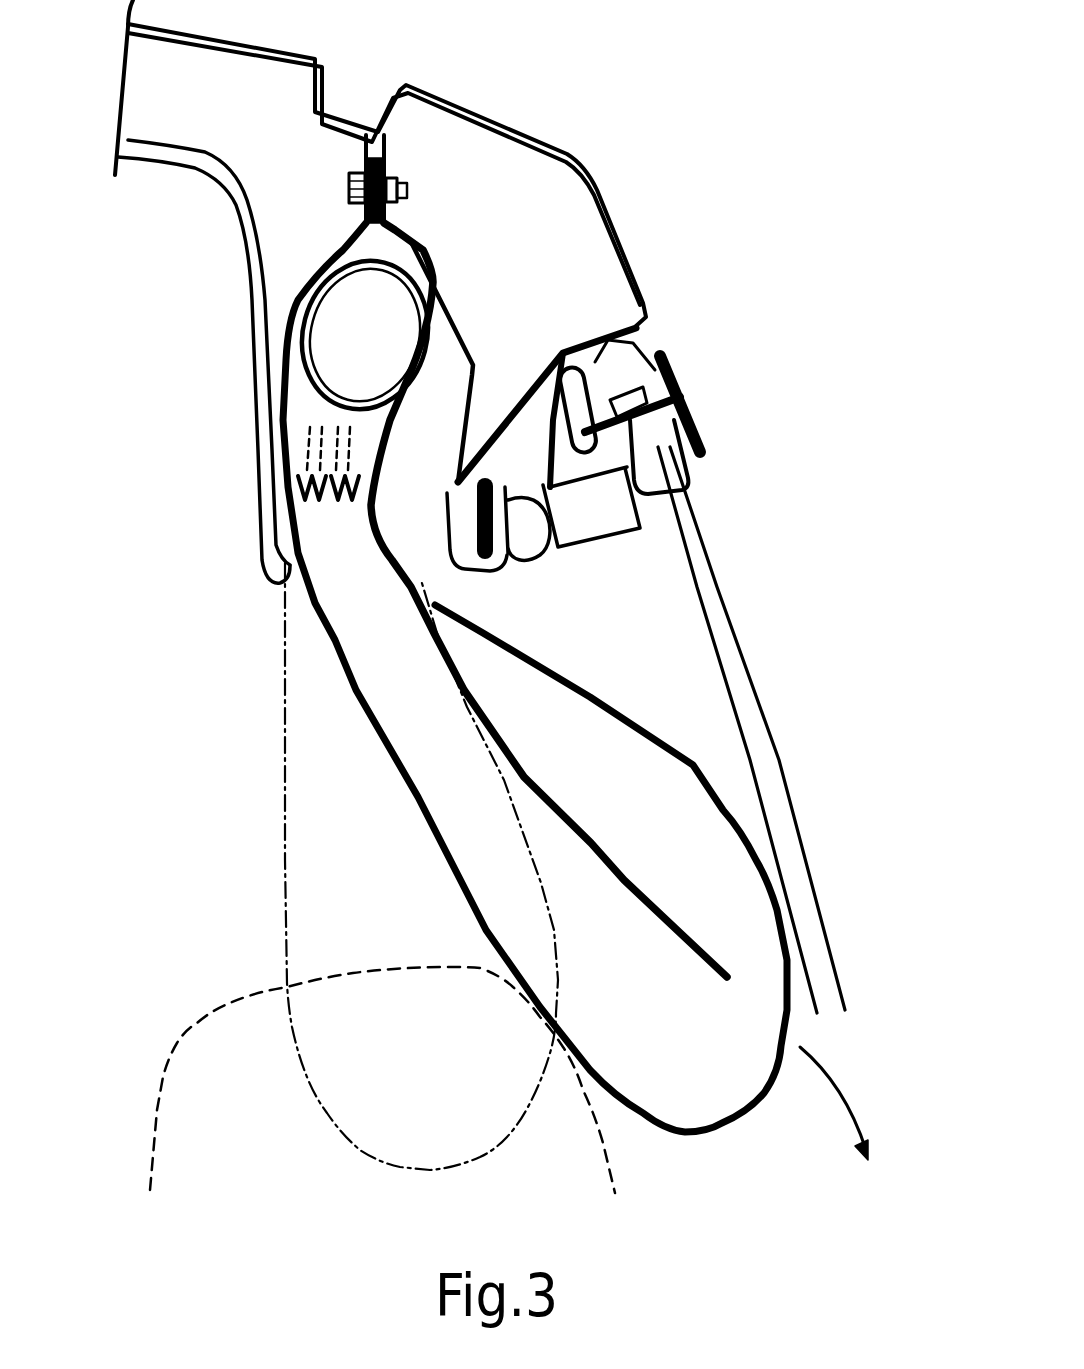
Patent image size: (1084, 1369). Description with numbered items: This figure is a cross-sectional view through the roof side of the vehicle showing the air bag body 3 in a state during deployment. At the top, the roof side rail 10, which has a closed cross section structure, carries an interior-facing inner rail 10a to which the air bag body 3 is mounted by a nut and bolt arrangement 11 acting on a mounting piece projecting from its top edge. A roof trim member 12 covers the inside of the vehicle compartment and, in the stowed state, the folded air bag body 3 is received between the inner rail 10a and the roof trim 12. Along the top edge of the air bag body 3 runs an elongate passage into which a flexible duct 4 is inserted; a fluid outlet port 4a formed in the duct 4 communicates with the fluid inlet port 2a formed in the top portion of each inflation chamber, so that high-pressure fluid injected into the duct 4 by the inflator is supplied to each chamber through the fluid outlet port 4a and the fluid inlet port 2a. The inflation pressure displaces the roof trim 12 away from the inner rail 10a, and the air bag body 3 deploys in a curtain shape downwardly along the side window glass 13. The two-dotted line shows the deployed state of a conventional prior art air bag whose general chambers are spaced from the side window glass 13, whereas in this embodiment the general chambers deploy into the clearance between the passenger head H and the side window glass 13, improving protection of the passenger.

The roof side rail 10 is at (566, 152).
The inner rail 10a is at (458, 323).
The nut and bolt arrangement 11 is at (352, 185).
The roof trim member 12 is at (262, 341).
The flexible duct 4 is at (305, 303).
The fluid outlet port 4a is at (320, 410).
The fluid inlet port 2a is at (360, 540).
The air bag body 3 is at (384, 751).
The side window glass 13 is at (742, 643).
The passenger head H is at (177, 1040).